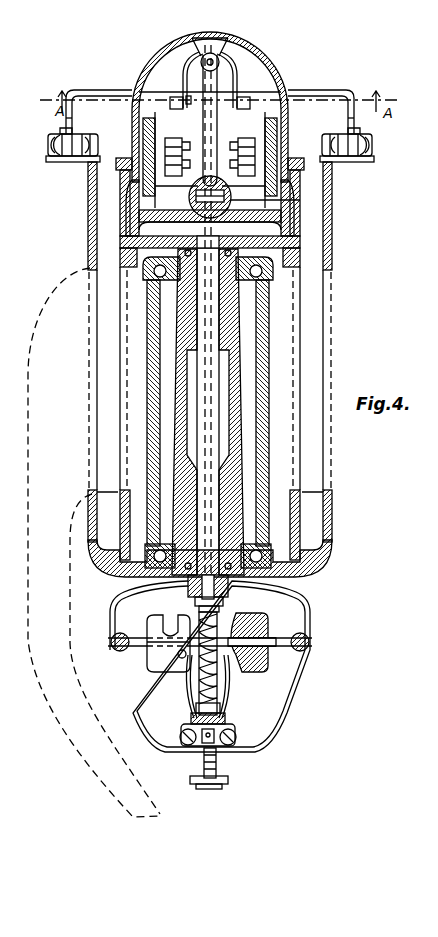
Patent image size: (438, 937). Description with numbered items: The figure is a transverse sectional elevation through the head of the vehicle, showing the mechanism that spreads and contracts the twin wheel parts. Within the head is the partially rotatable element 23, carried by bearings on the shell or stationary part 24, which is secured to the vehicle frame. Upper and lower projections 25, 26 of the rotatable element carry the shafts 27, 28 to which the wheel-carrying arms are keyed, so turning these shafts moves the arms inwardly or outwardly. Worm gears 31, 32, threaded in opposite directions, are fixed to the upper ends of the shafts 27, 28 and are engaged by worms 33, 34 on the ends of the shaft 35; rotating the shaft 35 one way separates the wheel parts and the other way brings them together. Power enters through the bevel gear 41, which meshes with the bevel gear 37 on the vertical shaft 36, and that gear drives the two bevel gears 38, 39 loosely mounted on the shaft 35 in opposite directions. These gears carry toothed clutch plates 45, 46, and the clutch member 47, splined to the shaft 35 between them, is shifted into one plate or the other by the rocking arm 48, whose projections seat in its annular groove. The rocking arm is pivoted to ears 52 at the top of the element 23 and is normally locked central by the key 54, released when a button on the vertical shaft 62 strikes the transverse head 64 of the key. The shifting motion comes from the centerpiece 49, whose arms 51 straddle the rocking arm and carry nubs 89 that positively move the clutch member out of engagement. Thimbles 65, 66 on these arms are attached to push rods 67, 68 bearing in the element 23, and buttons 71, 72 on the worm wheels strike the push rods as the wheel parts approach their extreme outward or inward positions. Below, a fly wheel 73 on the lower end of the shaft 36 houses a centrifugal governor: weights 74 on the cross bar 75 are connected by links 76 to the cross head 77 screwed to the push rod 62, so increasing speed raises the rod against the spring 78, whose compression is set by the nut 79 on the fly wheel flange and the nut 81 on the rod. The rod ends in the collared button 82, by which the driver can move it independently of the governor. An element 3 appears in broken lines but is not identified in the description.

The flexible conduit 3 is at (36, 470).
The partially rotatable element 23 is at (283, 66).
The shell or stationary part 24 is at (272, 350).
The arm or projection 25 is at (88, 222).
The arm or projection 26 is at (88, 520).
The shaft 27 is at (102, 380).
The shaft 28 is at (318, 372).
The worm gear 31 is at (88, 162).
The worm gear 32 is at (332, 162).
The worm 33 is at (76, 150).
The worm 34 is at (332, 150).
The shaft 35 is at (178, 140).
The rotatable vertical shaft 36 is at (208, 418).
The bevel gear 37 is at (150, 224).
The bevel gear 38 is at (125, 118).
The bevel gear 39 is at (300, 110).
The bevel gear 41 is at (300, 200).
The toothed clutch plate 45 is at (124, 170).
The toothed clutch plate 46 is at (304, 180).
The clutch member 47 is at (180, 180).
The rocking arm 48 is at (220, 134).
The centerpiece 49 is at (192, 40).
The arms 51 is at (184, 74).
The ears 52 is at (222, 56).
The key 54 is at (218, 110).
The vertical shaft or push rod 62 is at (208, 437).
The transverse head 64 is at (231, 193).
The thimble 65 is at (175, 97).
The thimble 66 is at (246, 97).
The push rod 67 is at (112, 92).
The push rod 68 is at (298, 96).
The button 71 is at (82, 130).
The button 72 is at (322, 130).
The fly wheel 73 is at (312, 616).
The governor weights 74 is at (175, 630).
The cross bar 75 is at (278, 650).
The links 76 is at (186, 690).
The cross head 77 is at (203, 746).
The spring 78 is at (197, 700).
The nut 79 is at (224, 609).
The nut 81 is at (226, 722).
The button 82 is at (228, 782).
The nubs 89 is at (189, 104).